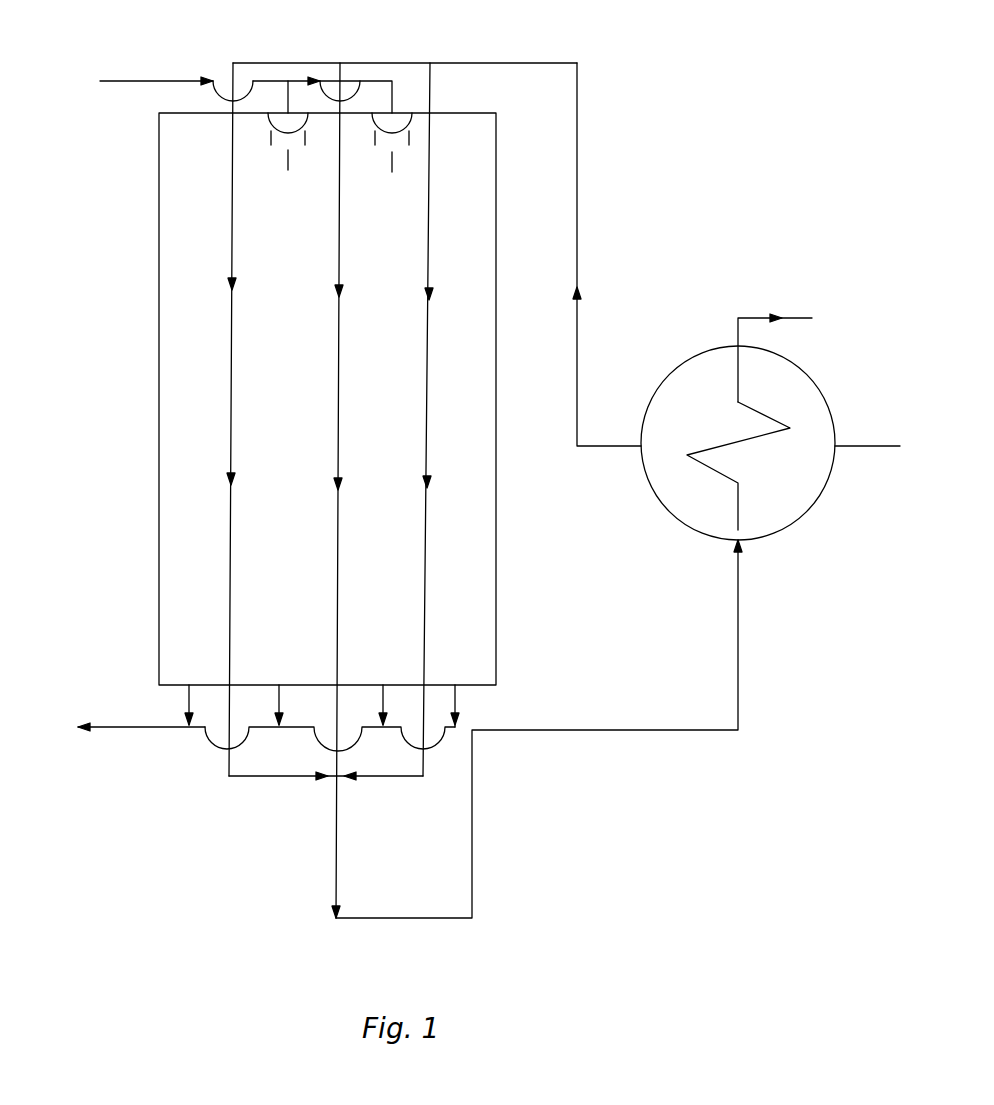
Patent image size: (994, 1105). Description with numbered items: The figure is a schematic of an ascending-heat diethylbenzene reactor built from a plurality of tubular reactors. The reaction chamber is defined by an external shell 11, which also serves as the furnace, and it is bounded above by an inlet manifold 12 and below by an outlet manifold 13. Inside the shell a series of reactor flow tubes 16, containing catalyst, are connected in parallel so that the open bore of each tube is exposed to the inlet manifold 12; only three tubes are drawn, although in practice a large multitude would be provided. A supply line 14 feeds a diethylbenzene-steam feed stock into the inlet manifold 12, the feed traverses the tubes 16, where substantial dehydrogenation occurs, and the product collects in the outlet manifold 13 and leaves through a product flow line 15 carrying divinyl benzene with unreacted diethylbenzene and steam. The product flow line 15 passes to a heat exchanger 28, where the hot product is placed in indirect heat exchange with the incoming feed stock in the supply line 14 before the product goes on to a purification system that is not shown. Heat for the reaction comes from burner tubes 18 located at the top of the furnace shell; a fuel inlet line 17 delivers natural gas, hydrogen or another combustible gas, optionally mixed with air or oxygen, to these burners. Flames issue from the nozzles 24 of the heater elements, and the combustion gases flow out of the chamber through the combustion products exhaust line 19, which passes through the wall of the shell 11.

The external shell 11 is at (159, 342).
The inlet manifold 12 is at (305, 62).
The outlet manifold 13 is at (291, 778).
The supply line 14 is at (577, 172).
The product flow line 15 is at (472, 831).
The reactor flow tubes 16 is at (229, 441).
The fuel inlet line 17 is at (150, 80).
The burner tubes 18 is at (256, 80).
The combustion products exhaust line 19 is at (125, 727).
The nozzles 24 is at (373, 123).
The heat exchanger 28 is at (809, 508).